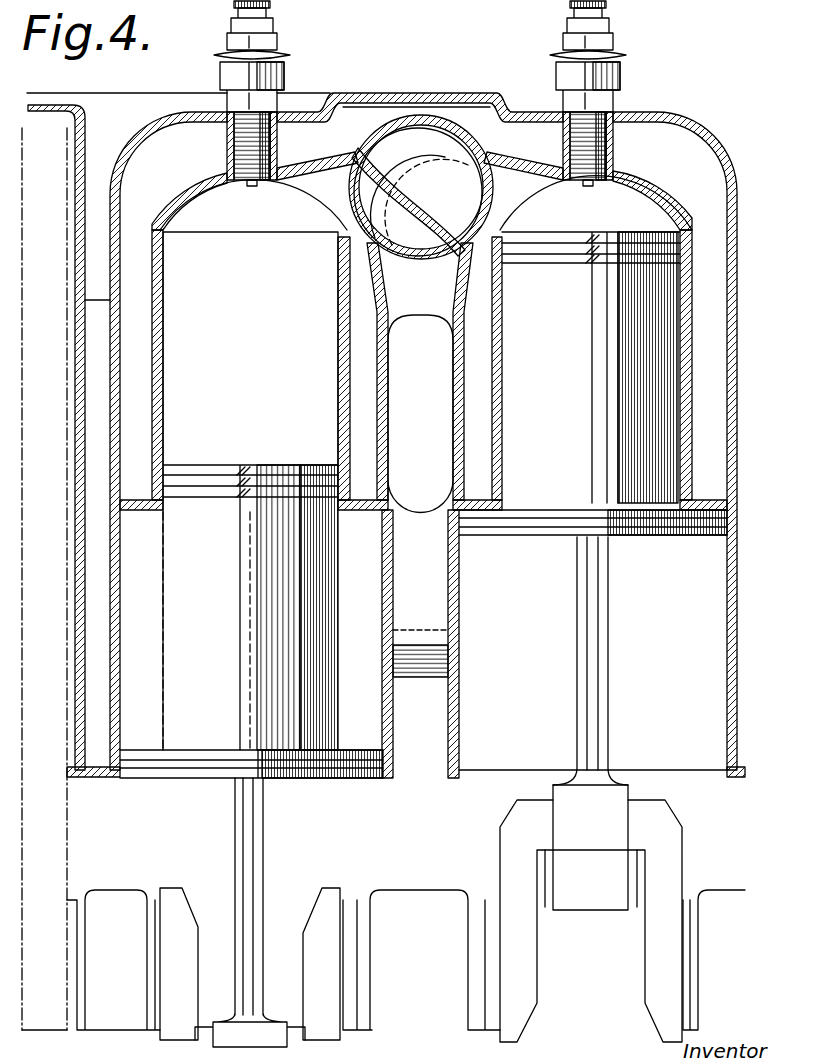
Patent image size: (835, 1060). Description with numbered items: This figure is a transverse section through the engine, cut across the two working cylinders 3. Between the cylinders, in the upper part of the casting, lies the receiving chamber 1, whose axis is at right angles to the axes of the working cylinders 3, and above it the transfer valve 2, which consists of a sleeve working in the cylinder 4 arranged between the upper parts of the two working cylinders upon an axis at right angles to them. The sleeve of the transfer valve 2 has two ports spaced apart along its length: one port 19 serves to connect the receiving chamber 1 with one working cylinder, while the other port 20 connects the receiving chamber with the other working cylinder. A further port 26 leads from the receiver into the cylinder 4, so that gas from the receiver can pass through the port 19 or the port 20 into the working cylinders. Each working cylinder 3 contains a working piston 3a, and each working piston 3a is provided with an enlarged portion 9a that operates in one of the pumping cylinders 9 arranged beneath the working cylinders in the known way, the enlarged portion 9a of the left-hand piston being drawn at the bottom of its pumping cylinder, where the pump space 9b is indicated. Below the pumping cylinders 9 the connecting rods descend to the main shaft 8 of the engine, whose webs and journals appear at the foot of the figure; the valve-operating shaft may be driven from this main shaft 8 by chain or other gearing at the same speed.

The receiving chamber 1 is at (420, 414).
The transfer valve 2 is at (377, 120).
The working cylinders 3 is at (163, 358).
The working pistons 3a is at (213, 523).
The cylinder 4 is at (430, 120).
The main shaft 8 is at (347, 937).
The pumping cylinders 9 is at (460, 620).
The enlarged portion 9a is at (648, 540).
The pump chamber 9b is at (120, 630).
The port 19 is at (353, 188).
The port 20 is at (528, 212).
The port 26 is at (425, 290).